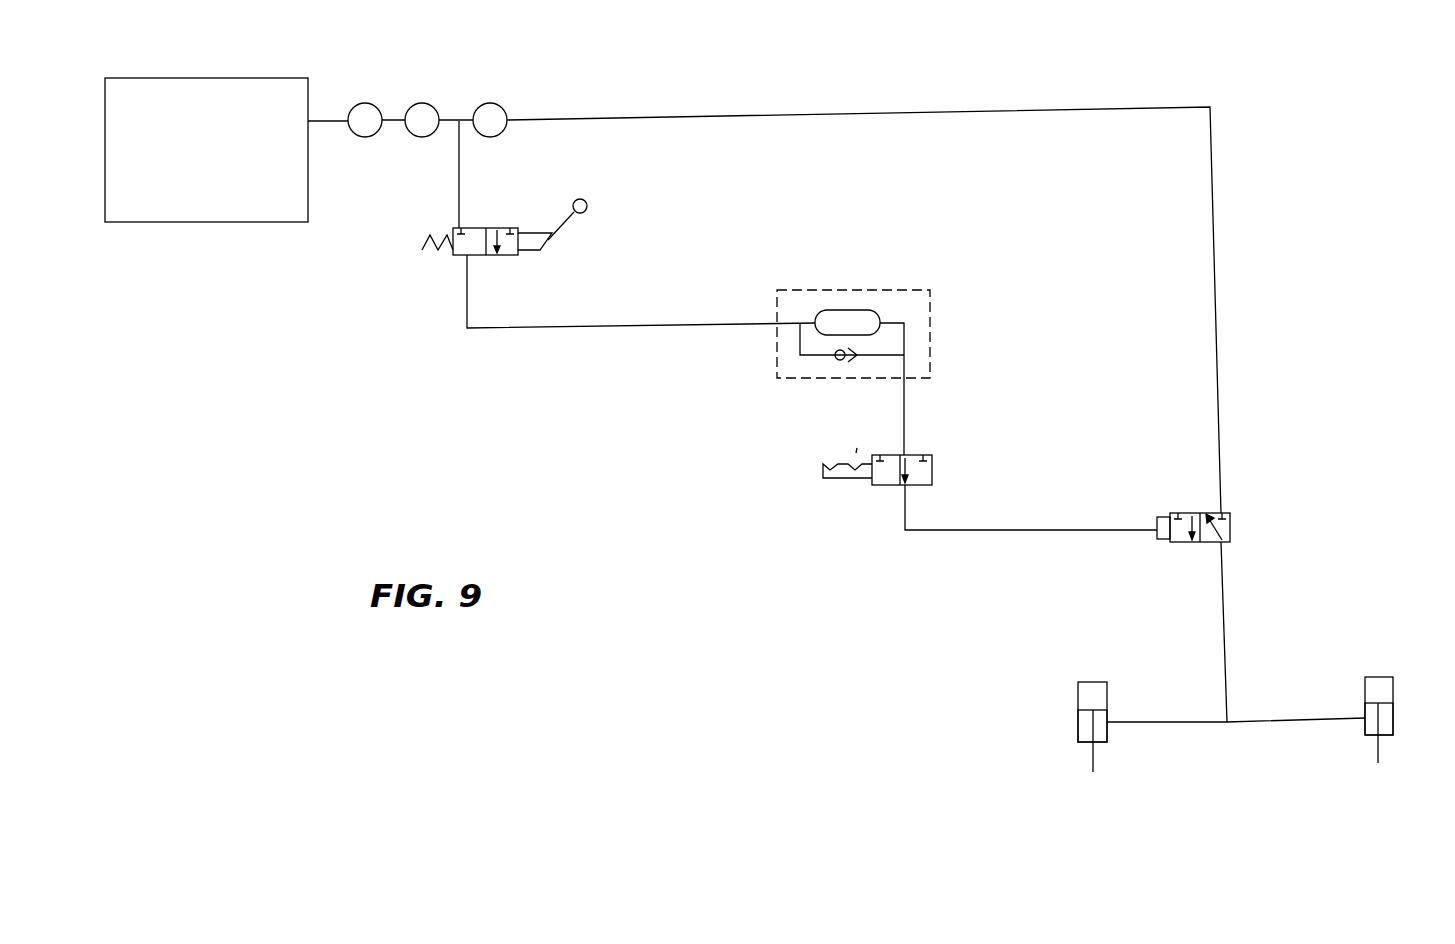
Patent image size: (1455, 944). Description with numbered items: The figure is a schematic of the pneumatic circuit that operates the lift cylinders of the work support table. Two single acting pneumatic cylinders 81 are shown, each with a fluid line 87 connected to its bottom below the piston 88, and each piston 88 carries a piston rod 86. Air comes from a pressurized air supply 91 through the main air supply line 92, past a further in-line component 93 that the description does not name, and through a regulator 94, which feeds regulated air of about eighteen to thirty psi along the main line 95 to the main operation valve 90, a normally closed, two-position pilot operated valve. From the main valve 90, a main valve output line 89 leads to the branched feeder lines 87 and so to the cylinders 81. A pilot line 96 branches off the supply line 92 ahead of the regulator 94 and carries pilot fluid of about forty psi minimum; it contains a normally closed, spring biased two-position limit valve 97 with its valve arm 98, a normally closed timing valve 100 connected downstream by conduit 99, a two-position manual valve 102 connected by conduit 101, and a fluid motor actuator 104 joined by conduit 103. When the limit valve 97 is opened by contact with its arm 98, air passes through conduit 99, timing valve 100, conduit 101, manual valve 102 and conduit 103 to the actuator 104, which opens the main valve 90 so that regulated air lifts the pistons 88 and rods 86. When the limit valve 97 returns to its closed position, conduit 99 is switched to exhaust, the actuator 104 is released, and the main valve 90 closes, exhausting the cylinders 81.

The pneumatic cylinder 81 is at (1107, 700).
The piston rod 86 is at (1093, 753).
The fluid line 87 is at (1168, 722).
The piston 88 is at (1082, 708).
The main valve output line 89 is at (1225, 610).
The main operation valve 90 is at (1227, 512).
The pressurized air supply 91 is at (223, 77).
The main air supply line 92 is at (323, 118).
The regulator 93 is at (418, 104).
The regulator 94 is at (492, 102).
The main line 95 is at (1038, 108).
The pilot line 96 is at (462, 177).
The limit valve 97 is at (453, 254).
The valve arm 98 is at (587, 218).
The conduit 99 is at (590, 327).
The timing valve 100 is at (855, 290).
The conduit 101 is at (904, 413).
The manual valve 102 is at (885, 487).
The conduit 103 is at (1030, 529).
The fluid motor actuator 104 is at (1157, 518).